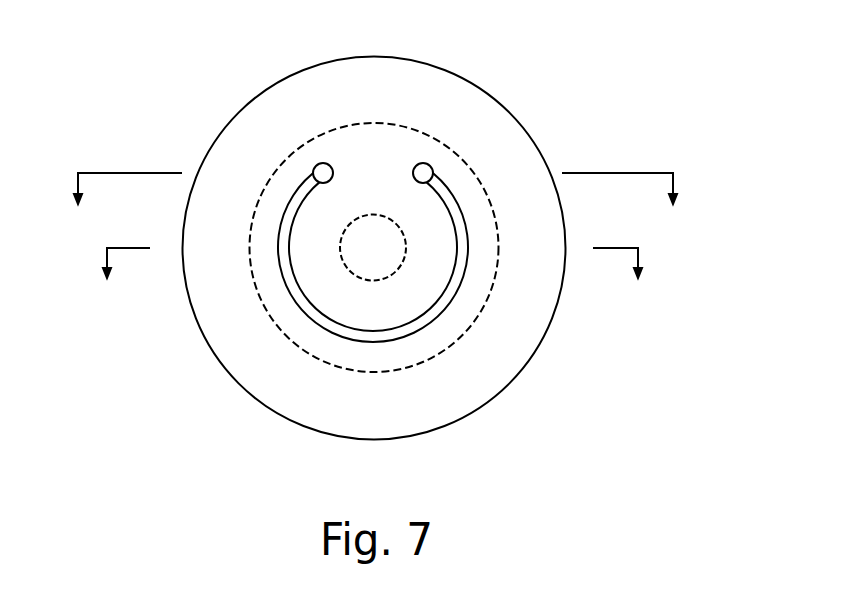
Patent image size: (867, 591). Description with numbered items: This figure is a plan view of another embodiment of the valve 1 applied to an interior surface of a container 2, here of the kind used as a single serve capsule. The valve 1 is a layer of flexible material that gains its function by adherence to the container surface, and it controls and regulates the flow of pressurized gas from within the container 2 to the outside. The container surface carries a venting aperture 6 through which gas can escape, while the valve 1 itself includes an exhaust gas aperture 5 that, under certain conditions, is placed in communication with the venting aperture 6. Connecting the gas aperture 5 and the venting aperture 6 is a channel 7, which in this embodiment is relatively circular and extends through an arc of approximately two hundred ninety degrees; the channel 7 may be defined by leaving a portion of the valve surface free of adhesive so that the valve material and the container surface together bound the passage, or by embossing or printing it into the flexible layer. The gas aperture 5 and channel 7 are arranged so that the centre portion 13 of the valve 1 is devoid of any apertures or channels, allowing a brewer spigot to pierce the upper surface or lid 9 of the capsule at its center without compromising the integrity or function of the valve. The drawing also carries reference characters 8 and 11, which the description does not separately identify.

The valve 1 is at (467, 313).
The container 2 is at (542, 340).
The exhaust gas aperture 5 is at (333, 165).
The venting aperture 6 is at (421, 163).
The channel 7 is at (375, 342).
The section line VIII-VIII 8 is at (376, 213).
The upper surface or lid 9 is at (372, 288).
The annular gap 11 is at (327, 287).
The centre portion 13 is at (382, 265).